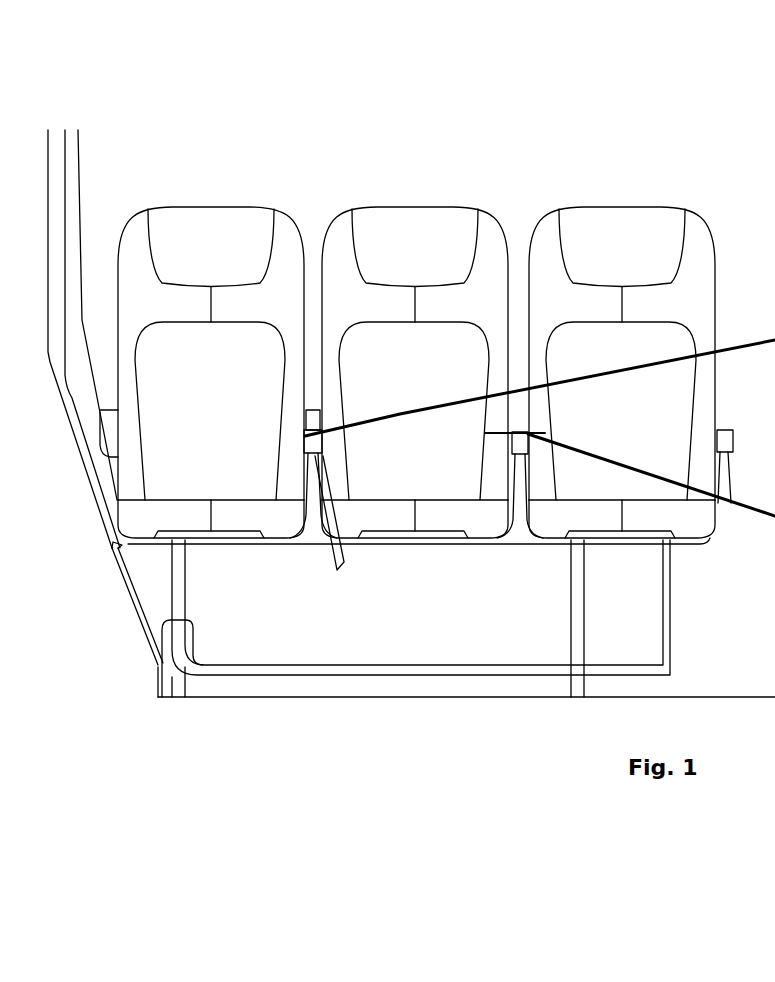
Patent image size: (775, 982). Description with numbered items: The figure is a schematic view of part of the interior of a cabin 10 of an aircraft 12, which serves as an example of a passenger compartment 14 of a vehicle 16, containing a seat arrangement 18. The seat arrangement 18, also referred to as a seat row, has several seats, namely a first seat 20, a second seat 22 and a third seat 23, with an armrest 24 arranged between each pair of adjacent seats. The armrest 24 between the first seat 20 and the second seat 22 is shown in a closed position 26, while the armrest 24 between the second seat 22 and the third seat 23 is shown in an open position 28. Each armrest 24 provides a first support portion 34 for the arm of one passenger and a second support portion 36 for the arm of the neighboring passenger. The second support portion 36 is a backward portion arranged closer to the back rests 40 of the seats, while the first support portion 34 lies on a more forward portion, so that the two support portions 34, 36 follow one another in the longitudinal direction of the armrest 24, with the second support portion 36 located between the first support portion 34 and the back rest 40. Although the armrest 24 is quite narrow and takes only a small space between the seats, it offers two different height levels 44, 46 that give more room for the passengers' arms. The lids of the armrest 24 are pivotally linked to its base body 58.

The cabin 10 is at (103, 177).
The aircraft 12 is at (208, 745).
The passenger compartment 14 is at (200, 140).
The vehicle 16 is at (258, 773).
The seat arrangement 18 is at (622, 333).
The first seat 20 is at (227, 340).
The second seat 22 is at (388, 222).
The third seat 23 is at (597, 223).
The armrest 24 is at (332, 548).
The closed position 26 is at (298, 392).
The open position 28 is at (551, 428).
The first support portion 34 is at (323, 400).
The second support portion 36 is at (523, 422).
The back rest 40 is at (518, 324).
The first height level 44 is at (297, 410).
The second height level 46 is at (486, 432).
The base body 58 is at (304, 438).